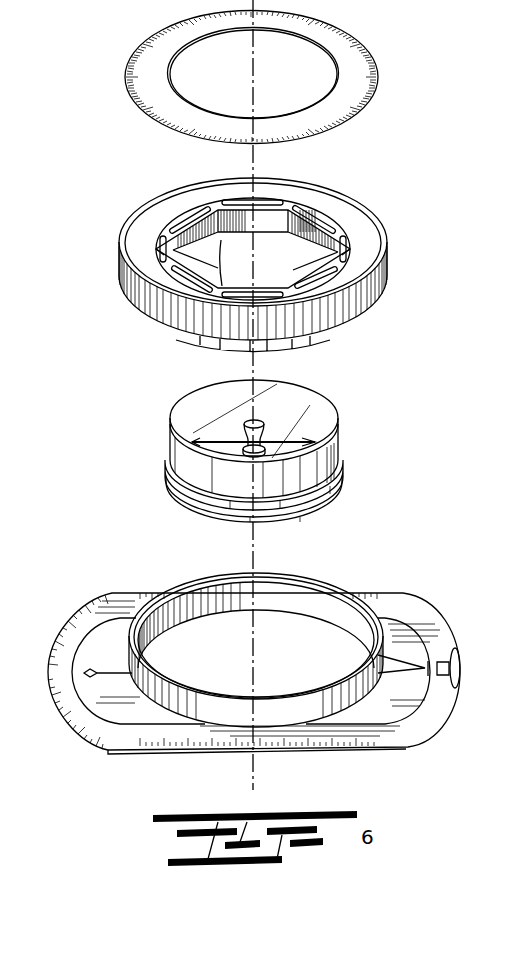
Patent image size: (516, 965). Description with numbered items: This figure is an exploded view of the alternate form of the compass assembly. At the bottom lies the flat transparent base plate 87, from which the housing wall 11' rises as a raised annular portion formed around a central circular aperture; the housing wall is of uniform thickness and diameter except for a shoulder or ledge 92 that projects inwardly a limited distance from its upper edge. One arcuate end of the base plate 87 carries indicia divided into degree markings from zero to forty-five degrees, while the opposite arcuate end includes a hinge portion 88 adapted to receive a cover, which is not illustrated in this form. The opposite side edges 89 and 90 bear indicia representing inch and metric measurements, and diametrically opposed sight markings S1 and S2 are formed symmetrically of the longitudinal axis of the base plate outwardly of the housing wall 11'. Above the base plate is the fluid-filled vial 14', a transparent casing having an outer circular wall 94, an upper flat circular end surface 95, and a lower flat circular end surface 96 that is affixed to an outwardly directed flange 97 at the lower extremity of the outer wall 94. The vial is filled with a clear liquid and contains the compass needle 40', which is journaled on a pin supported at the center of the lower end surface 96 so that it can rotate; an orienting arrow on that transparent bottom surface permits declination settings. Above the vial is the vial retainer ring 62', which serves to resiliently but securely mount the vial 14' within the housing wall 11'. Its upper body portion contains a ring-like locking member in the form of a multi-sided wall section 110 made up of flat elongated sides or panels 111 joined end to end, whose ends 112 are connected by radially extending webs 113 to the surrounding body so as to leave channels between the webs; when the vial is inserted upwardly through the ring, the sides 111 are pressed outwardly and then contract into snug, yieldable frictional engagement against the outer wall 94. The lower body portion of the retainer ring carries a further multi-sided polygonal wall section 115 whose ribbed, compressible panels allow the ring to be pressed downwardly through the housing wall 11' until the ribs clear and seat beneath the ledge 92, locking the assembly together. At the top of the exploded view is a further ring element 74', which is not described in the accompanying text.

The compass dial ring 74' is at (279, 77).
The vial retainer ring 62' is at (284, 250).
The multi-sided polygonal wall section 115 is at (348, 328).
The multi-sided wall section 110 is at (317, 235).
The sides or panels 111 is at (193, 232).
The ends (corners) of the sides 112 is at (287, 230).
The radially extending webs 113 is at (290, 203).
The fluid-filled vial 14' is at (271, 443).
The upper flat circular end surface 95 is at (192, 403).
The compass needle 40' is at (276, 411).
The outer circular wall 94 is at (172, 460).
The outwardly directed flange 97 is at (340, 485).
The lower flat circular end surface 96 is at (325, 503).
The base plate 87 is at (264, 671).
The hinge portion 88 is at (460, 667).
The side edge 89 is at (143, 594).
The side edge 90 is at (193, 752).
The shoulder or ledge 92 is at (300, 590).
The housing wall 11' is at (263, 635).
The sight marking S1 is at (101, 668).
The sight marking S2 is at (403, 660).